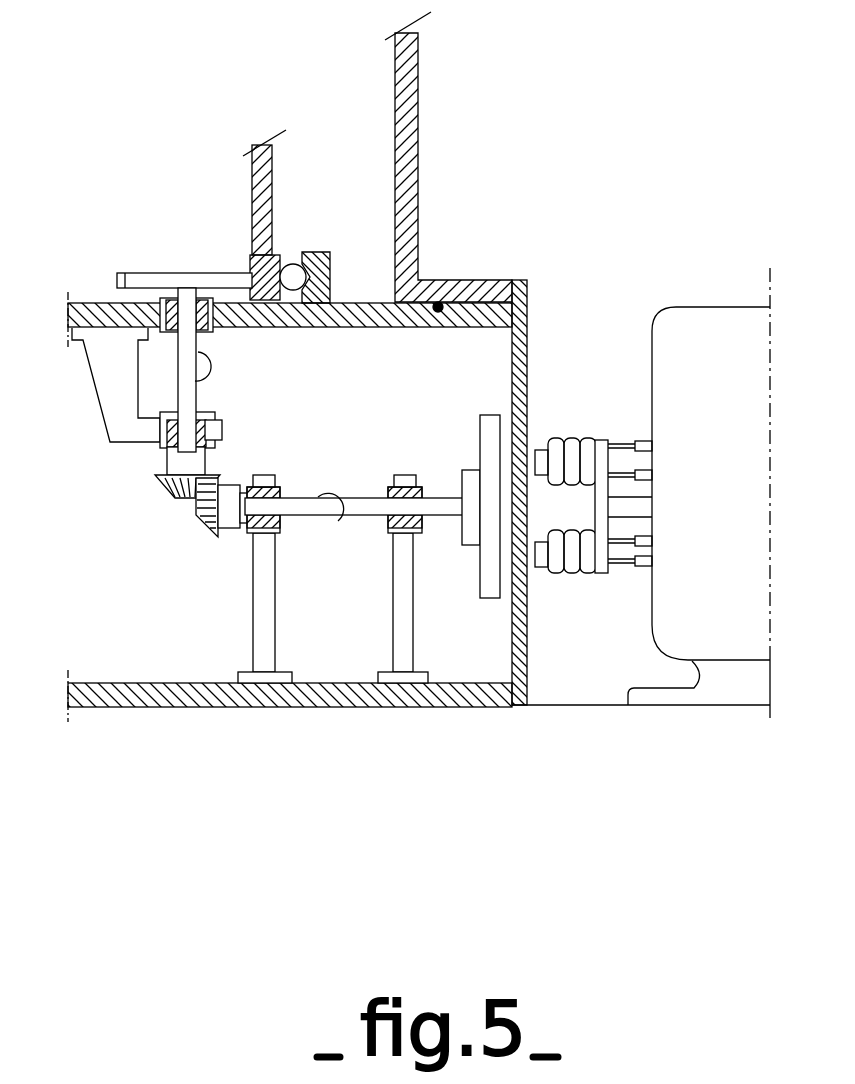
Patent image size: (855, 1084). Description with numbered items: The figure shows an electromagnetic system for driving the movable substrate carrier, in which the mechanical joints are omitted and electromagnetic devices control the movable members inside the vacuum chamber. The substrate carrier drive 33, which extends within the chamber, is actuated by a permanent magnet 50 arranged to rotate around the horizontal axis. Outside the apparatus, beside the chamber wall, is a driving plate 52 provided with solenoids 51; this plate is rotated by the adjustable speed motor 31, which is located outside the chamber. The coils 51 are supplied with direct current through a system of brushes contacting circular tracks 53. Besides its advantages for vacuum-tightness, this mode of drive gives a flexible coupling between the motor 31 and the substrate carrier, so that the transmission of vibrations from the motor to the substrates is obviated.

The adjustable speed motor 31 is at (707, 612).
The drive 33 is at (198, 470).
The permanent magnet 50 is at (493, 560).
The solenoids 51 is at (545, 462).
The driving plate 52 is at (602, 457).
The circular tracks 53 is at (622, 445).